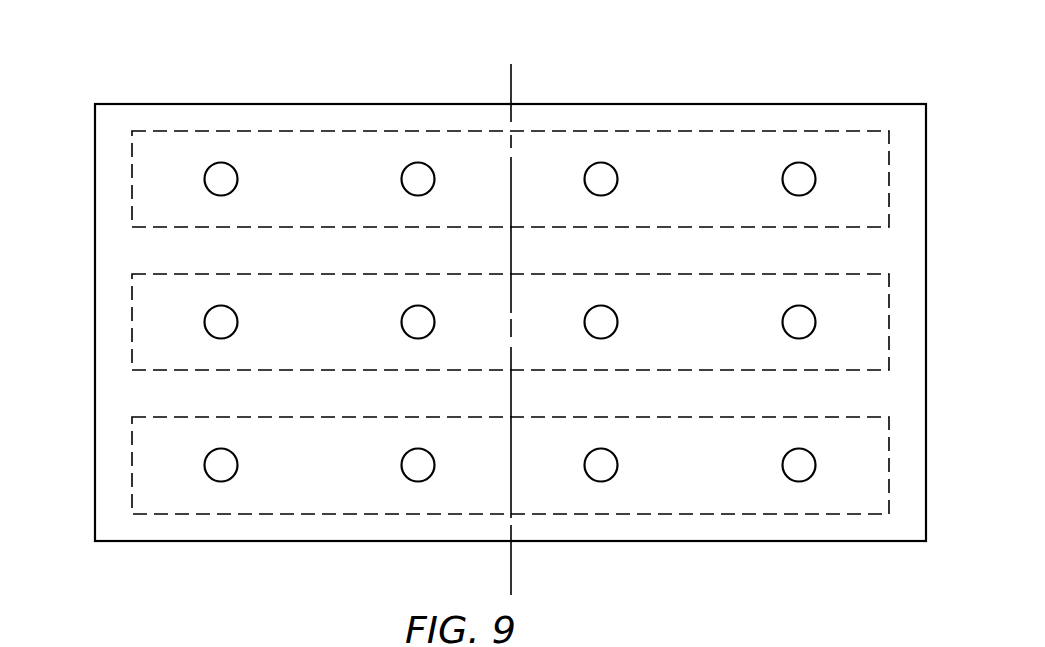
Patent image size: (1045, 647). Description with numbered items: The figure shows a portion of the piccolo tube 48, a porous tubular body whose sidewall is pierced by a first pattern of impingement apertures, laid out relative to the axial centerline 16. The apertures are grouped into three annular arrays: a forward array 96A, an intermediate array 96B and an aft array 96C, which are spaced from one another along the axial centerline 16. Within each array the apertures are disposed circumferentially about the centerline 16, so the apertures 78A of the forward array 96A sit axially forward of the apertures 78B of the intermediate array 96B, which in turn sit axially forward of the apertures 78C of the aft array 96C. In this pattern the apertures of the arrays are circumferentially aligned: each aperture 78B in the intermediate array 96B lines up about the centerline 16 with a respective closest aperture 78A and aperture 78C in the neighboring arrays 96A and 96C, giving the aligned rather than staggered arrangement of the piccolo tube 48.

The piccolo tube 48 is at (889, 84).
The axial centerline 16 is at (511, 586).
The forward array 96A is at (126, 188).
The intermediate array 96B is at (126, 331).
The aft array 96C is at (126, 476).
The apertures 78A is at (401, 179).
The apertures 78B is at (401, 322).
The apertures 78C is at (401, 465).